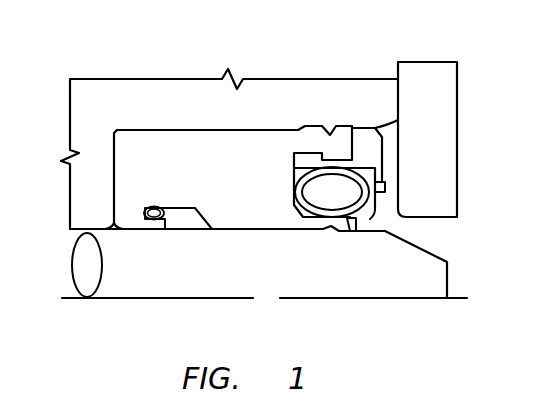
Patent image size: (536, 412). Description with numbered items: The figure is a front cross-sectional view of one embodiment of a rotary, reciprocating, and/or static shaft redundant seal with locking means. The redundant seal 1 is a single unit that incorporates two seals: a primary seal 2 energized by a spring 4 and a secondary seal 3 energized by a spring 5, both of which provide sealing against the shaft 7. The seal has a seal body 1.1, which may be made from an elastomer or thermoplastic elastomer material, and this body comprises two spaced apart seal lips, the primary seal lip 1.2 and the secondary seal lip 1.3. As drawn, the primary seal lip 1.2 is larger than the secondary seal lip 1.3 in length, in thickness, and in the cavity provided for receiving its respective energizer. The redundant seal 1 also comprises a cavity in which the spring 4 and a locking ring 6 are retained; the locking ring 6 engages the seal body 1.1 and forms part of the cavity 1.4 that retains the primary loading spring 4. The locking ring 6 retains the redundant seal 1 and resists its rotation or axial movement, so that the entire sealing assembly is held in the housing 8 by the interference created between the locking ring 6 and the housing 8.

The housing 8 is at (103, 100).
The redundant seal 1 is at (271, 157).
The seal body 1.1 is at (163, 160).
The cavity 1.4 is at (332, 190).
The locking ring 6 is at (368, 147).
The spring 4 is at (386, 185).
The primary seal 2 is at (362, 220).
The primary seal lip 1.2 is at (346, 226).
The shaft 7 is at (375, 270).
The secondary seal lip 1.3 is at (197, 231).
The spring 5 is at (143, 212).
The secondary seal 3 is at (160, 231).